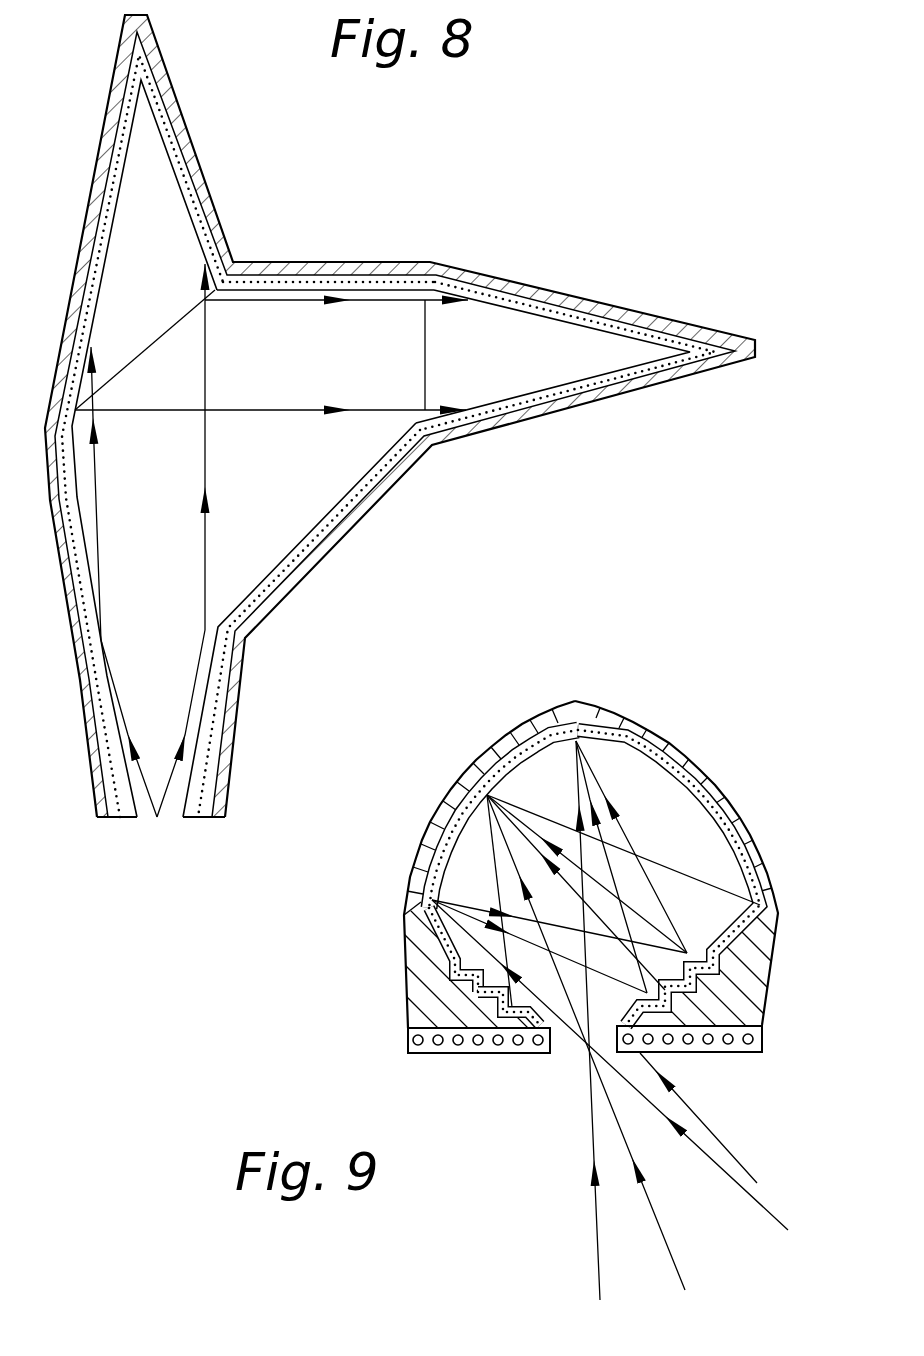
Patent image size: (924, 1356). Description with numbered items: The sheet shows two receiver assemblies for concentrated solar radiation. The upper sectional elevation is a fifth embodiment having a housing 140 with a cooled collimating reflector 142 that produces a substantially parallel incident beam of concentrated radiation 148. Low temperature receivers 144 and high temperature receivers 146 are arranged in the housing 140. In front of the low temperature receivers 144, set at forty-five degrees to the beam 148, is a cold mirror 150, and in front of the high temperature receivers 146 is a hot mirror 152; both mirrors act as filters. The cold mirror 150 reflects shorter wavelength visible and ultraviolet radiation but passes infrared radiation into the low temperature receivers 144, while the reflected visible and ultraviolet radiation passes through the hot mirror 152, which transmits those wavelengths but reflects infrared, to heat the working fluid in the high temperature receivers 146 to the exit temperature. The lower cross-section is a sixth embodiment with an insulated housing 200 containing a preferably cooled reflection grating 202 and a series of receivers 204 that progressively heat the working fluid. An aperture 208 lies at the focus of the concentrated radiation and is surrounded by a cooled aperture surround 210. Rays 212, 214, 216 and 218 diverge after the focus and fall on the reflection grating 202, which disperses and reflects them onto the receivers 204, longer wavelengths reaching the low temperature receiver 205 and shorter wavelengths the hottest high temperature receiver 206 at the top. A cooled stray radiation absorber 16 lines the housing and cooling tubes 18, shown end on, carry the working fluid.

In FIG. 8, the housing 140 is at (377, 513).
In FIG. 8, the cooled collimating reflector 142 is at (115, 743).
In FIG. 8, the low temperature receivers 144 is at (148, 187).
In FIG. 8, the high temperature receivers 146 is at (540, 332).
In FIG. 8, the incident beam of concentrated radiation 148 is at (212, 552).
In FIG. 8, the cold mirror 150 is at (163, 325).
In FIG. 8, the hot mirror 152 is at (425, 352).
In FIG. 9, the cooled stray radiation absorber 16 is at (435, 865).
In FIG. 9, the cooling tubes 18 is at (737, 1033).
In FIG. 9, the insulated housing 200 is at (765, 942).
In FIG. 9, the reflection grating 202 is at (647, 743).
In FIG. 9, the receivers 204 is at (493, 1002).
In FIG. 9, the low temperature receiver 205 is at (412, 1056).
In FIG. 9, the high temperature receiver 206 is at (453, 958).
In FIG. 9, the aperture 208 is at (567, 1053).
In FIG. 9, the cooled aperture surround 210 is at (527, 1060).
In FIG. 9, the ray 212 is at (773, 1203).
In FIG. 9, the ray 214 is at (678, 1262).
In FIG. 9, the ray 216 is at (598, 1273).
In FIG. 9, the light ray 218 is at (718, 1133).